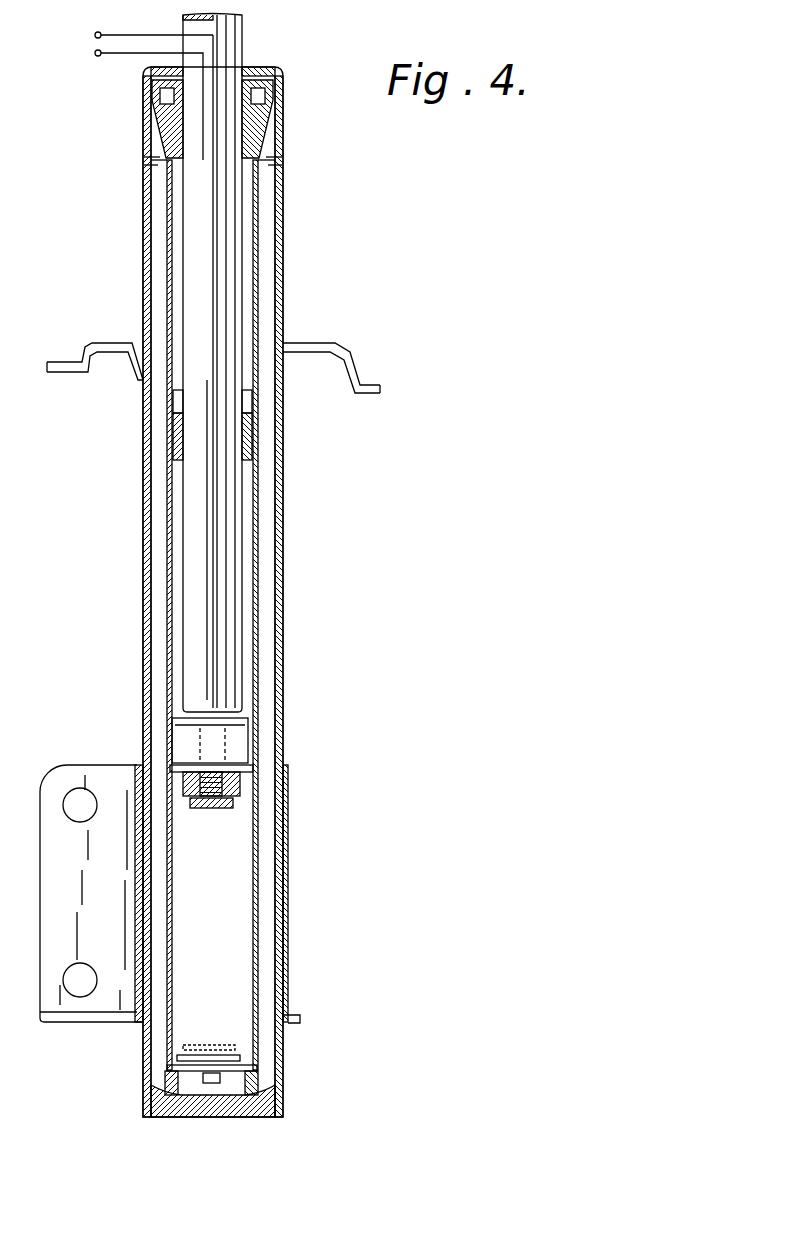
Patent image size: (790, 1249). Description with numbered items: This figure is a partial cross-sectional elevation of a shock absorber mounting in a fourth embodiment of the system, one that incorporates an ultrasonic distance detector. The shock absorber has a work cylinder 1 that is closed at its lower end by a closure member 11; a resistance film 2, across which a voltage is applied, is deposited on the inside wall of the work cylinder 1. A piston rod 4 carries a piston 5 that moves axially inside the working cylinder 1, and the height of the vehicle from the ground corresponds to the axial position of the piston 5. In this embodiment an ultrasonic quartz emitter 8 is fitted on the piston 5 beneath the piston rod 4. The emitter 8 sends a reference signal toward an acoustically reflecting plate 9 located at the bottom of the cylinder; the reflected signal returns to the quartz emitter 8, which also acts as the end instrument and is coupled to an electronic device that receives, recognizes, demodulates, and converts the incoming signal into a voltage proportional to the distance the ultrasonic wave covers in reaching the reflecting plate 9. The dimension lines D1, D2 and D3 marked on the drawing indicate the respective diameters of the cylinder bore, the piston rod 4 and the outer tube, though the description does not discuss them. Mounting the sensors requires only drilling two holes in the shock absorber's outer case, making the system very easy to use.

The work cylinder 1 is at (288, 850).
The resistance film 2 is at (247, 962).
The piston rod 4 is at (237, 47).
The piston 5 is at (252, 727).
The ultrasonic quartz emitter 8 is at (240, 812).
The acoustically reflecting plate 9 is at (233, 1047).
The closure member 11 is at (280, 750).
The inner diameter of cylinder D1 is at (253, 503).
The diameter of piston rod D2 is at (240, 259).
The outer diameter of outer tube D3 is at (282, 559).